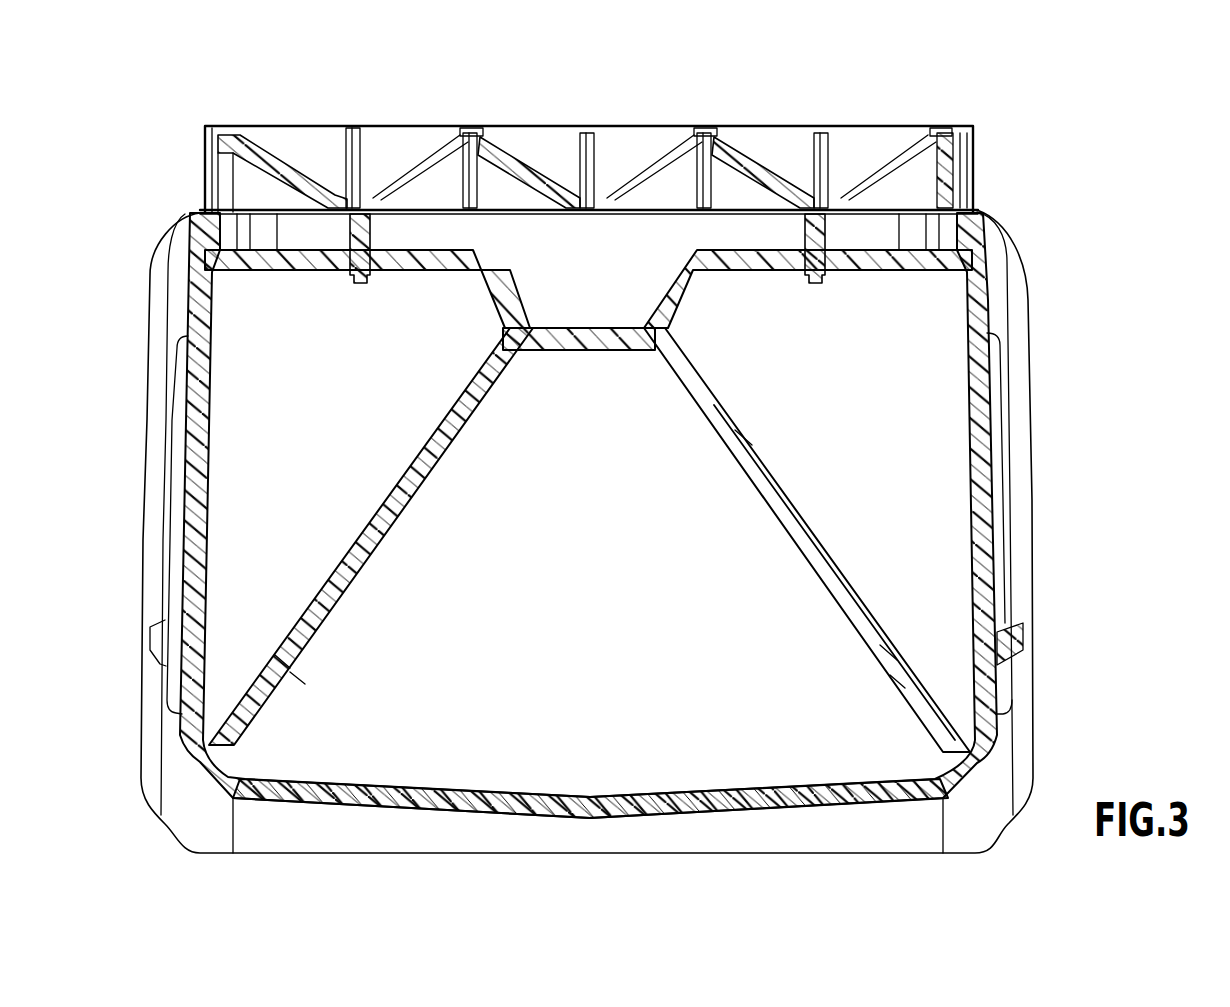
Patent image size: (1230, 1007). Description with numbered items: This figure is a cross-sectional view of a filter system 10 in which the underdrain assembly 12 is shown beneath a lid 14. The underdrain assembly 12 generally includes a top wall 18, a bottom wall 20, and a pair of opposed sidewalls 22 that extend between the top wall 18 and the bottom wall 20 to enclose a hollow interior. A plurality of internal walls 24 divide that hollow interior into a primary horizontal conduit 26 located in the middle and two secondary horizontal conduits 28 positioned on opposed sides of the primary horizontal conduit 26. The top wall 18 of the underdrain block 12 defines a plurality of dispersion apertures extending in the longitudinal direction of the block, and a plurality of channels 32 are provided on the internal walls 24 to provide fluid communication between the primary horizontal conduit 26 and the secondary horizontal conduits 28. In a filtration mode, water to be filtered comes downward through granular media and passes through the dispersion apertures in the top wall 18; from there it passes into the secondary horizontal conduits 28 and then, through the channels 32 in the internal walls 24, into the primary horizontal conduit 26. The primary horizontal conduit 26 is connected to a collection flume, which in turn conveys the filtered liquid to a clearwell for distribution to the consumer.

The container assembly 10 is at (291, 111).
The underdrain assembly 12 is at (1024, 295).
The lid 14 is at (976, 146).
The top wall 18 is at (410, 271).
The bottom wall 20 is at (597, 787).
The sidewalls 22 is at (968, 320).
The internal walls 24 is at (667, 379).
The primary horizontal conduit 26 is at (573, 609).
The secondary horizontal conduits 28 is at (298, 417).
The channels 32 is at (283, 678).